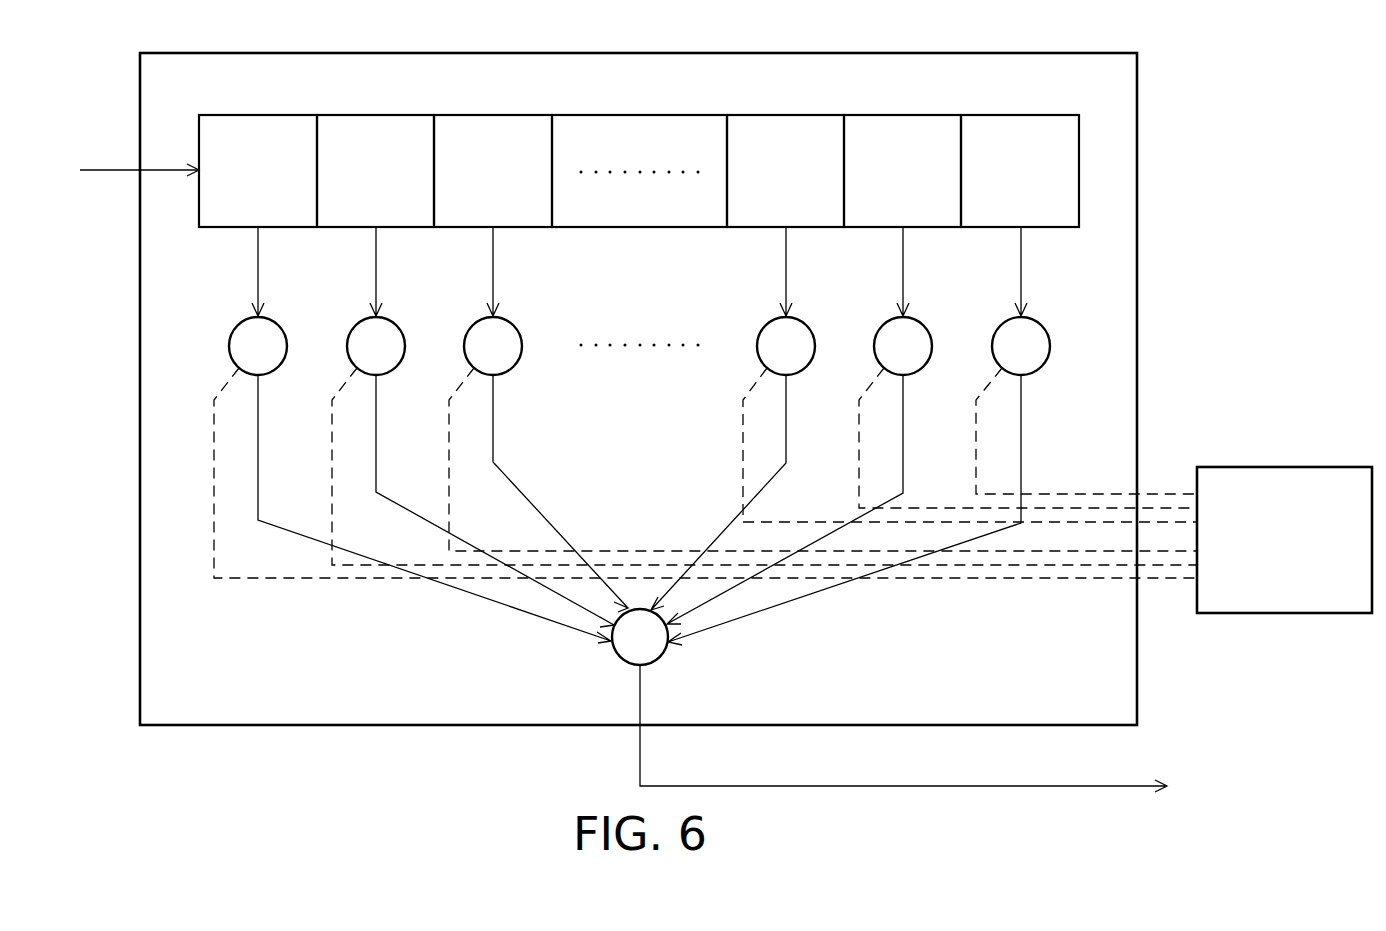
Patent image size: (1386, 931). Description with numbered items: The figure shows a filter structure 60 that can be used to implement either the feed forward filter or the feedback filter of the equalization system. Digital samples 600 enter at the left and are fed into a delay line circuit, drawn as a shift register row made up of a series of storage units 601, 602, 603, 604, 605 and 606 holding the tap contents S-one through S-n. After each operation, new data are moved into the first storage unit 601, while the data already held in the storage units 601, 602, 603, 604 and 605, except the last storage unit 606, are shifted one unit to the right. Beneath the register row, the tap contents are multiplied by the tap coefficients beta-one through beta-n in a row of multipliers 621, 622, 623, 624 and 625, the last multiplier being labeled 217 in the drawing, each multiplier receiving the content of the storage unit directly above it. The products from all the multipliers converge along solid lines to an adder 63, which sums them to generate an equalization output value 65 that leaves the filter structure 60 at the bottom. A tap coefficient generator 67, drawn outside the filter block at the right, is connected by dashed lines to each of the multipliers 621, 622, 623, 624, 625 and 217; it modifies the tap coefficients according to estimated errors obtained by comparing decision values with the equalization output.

The filter structure 60 is at (640, 53).
The digital samples 600 is at (115, 172).
The first storage unit 601 is at (260, 113).
The storage unit 602 is at (377, 113).
The storage unit 603 is at (495, 113).
The storage unit 604 is at (787, 113).
The storage unit 605 is at (904, 113).
The last storage unit 606 is at (1021, 113).
The multiplier 621 is at (278, 318).
The multiplier 622 is at (396, 318).
The multiplier 623 is at (513, 318).
The multiplier 624 is at (806, 318).
The multiplier 625 is at (923, 318).
The tap multiplier βn 217 is at (1041, 318).
The adder 63 is at (623, 662).
The equalization output value 65 is at (992, 786).
The tap coefficient generator 67 is at (1313, 467).